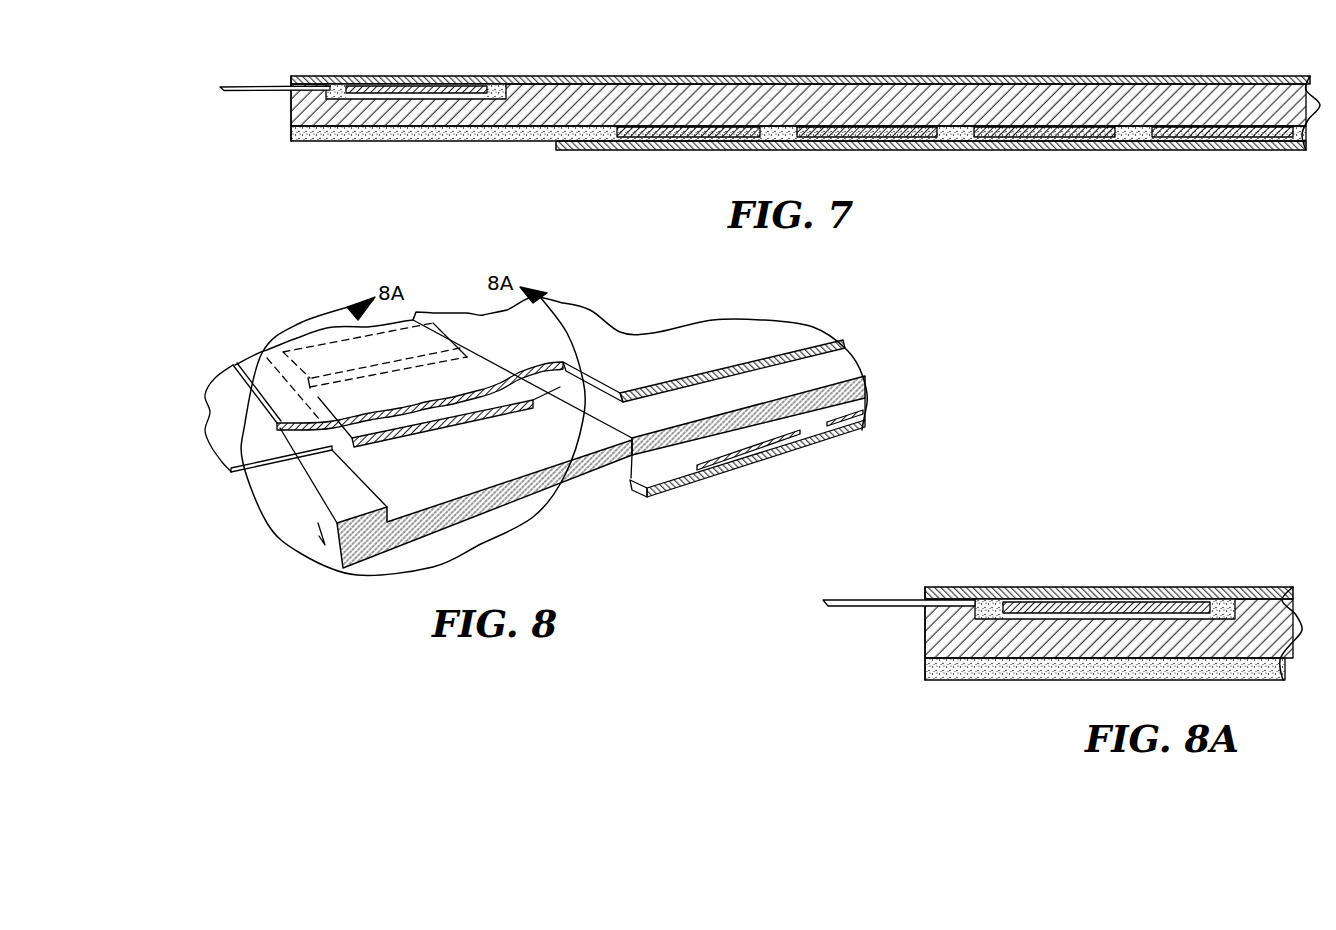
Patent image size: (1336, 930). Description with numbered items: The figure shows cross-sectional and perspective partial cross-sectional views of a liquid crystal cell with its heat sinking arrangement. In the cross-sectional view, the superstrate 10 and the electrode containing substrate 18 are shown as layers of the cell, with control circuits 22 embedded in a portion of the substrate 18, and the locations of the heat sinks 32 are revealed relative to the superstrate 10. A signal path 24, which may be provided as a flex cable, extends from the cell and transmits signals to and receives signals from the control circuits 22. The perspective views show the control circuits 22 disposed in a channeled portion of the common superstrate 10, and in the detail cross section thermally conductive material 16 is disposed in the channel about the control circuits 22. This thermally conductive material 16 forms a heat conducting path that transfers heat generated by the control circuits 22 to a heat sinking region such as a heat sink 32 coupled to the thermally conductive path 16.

In FIG. 7, the superstrate 10 is at (797, 100).
In FIG. 8, the superstrate 10 is at (305, 500).
In FIG. 8A, the superstrate 10 is at (937, 638).
In FIG. 8A, the thermally conductive material 16 is at (990, 603).
In FIG. 7, the substrate 18 is at (573, 77).
In FIG. 8, the substrate 18 is at (670, 362).
In FIG. 8A, the substrate 18 is at (1197, 588).
In FIG. 7, the control circuit 22 is at (418, 87).
In FIG. 8, the control circuit 22 is at (310, 362).
In FIG. 8A, the control circuit 22 is at (1108, 603).
In FIG. 7, the signal path 24 is at (237, 95).
In FIG. 8, the signal path 24 is at (223, 397).
In FIG. 8A, the signal path 24 is at (847, 610).
In FIG. 7, the heat sink 32 is at (337, 90).